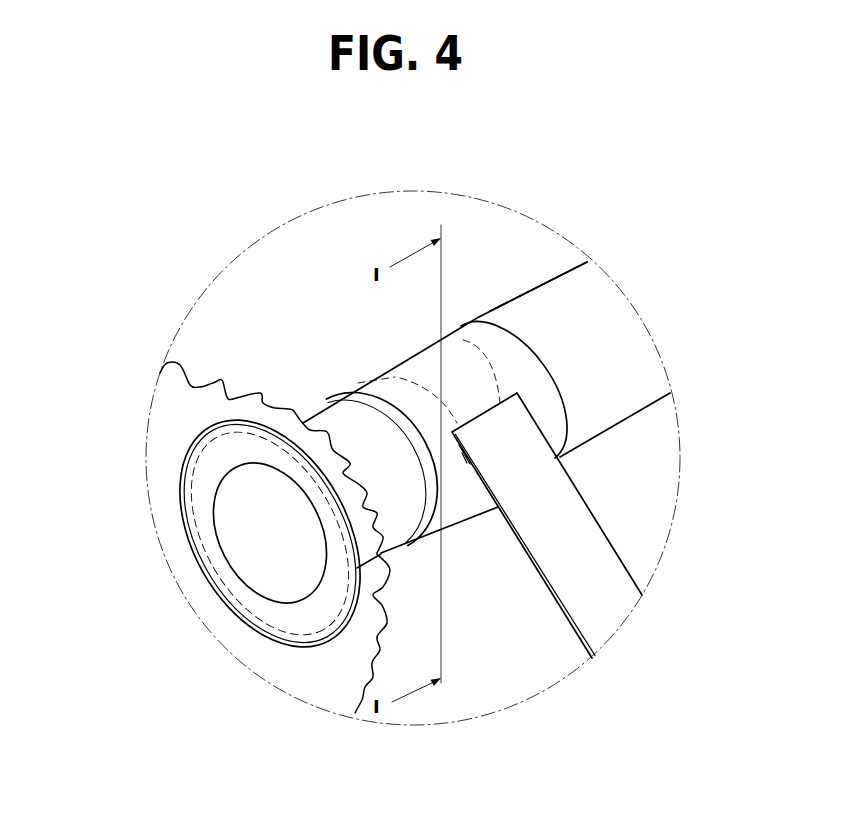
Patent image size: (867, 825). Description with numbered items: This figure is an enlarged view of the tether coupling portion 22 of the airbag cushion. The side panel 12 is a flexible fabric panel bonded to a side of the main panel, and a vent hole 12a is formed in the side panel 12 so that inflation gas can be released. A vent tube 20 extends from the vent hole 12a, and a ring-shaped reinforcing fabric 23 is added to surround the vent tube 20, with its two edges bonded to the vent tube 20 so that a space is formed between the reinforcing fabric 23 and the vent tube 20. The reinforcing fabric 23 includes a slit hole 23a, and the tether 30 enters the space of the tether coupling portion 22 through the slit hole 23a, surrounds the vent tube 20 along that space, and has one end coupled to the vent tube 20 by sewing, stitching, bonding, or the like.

The side panel 12 is at (167, 417).
The vent hole 12a is at (265, 527).
The vent tube 20 is at (630, 357).
The tether coupling portion 22 is at (379, 352).
The reinforcing fabric 23 is at (533, 372).
The slit hole 23a is at (457, 466).
The tether 30 is at (590, 554).